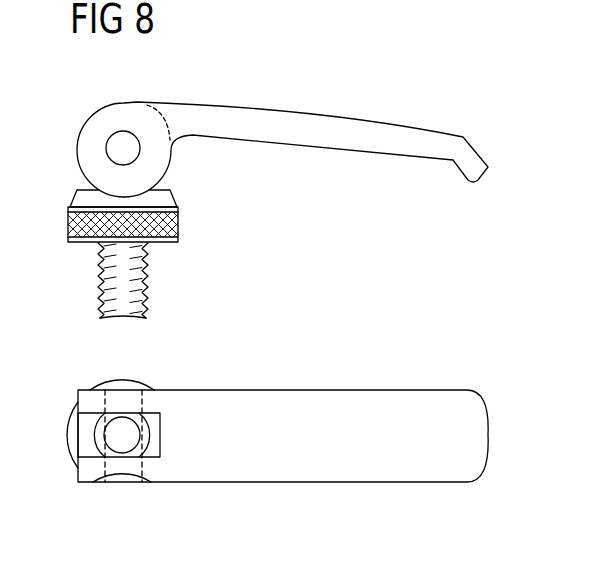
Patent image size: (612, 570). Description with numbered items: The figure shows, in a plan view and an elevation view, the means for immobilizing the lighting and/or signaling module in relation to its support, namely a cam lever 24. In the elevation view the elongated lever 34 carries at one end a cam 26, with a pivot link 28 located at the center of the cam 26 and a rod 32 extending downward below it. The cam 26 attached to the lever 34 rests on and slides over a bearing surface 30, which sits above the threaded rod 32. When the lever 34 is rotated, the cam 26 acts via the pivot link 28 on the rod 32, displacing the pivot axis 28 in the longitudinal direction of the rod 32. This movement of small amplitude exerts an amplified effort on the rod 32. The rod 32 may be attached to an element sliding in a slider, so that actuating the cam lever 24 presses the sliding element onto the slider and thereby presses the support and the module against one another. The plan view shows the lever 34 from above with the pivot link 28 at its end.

The cam lever 24 is at (413, 92).
The cam 26 is at (153, 175).
The pivot link 28 is at (115, 148).
The bearing surface 30 is at (178, 223).
The rod 32 is at (148, 287).
The lever 34 is at (300, 120).